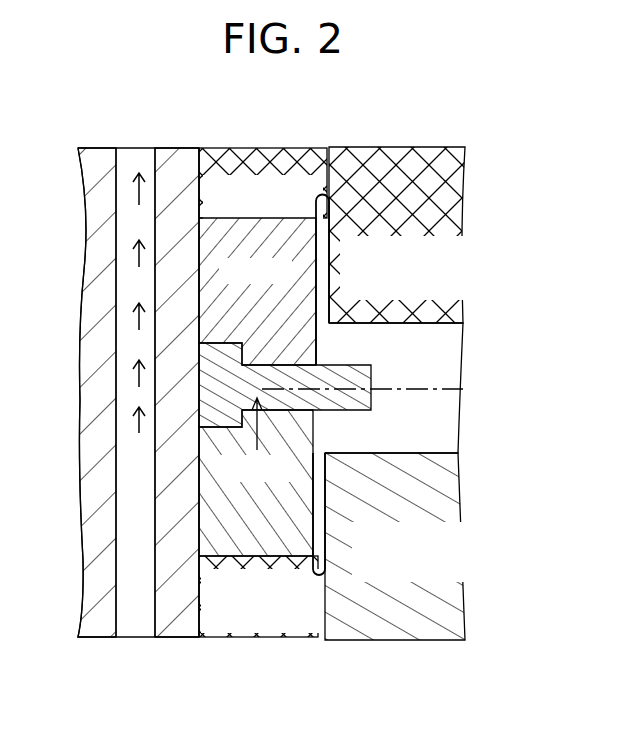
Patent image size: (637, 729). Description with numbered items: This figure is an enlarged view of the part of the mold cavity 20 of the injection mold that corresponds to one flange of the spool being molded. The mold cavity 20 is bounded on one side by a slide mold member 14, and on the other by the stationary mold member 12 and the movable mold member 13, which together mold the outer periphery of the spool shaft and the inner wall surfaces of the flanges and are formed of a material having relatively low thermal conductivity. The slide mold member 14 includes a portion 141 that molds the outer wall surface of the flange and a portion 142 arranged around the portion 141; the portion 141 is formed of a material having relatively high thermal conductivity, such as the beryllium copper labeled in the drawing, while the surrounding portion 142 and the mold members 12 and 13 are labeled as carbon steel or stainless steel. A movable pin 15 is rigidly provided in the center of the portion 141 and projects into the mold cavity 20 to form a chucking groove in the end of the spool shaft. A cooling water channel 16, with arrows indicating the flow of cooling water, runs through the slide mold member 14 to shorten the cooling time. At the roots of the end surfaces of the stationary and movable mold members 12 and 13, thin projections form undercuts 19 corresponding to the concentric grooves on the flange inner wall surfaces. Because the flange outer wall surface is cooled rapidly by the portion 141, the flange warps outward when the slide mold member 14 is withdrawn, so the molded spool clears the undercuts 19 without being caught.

The stationary mold member 12 is at (447, 622).
The movable mold member 13 is at (438, 162).
The slide mold member 14 is at (268, 388).
The portion of slide mold member 141 is at (298, 238).
The portion around portion 14-1 142 is at (225, 148).
The movable pin 15 is at (226, 397).
The cooling water channel 16 is at (140, 623).
The undercut 19 is at (345, 240).
The mold cavity 20 is at (450, 424).